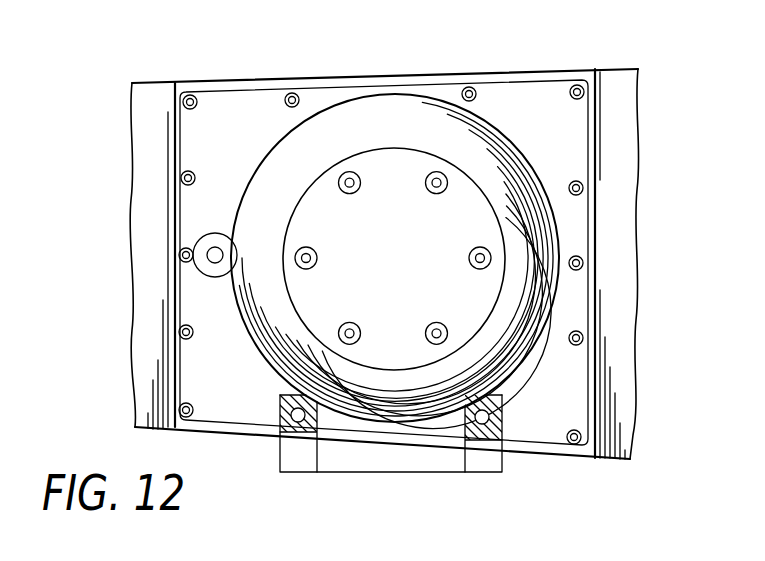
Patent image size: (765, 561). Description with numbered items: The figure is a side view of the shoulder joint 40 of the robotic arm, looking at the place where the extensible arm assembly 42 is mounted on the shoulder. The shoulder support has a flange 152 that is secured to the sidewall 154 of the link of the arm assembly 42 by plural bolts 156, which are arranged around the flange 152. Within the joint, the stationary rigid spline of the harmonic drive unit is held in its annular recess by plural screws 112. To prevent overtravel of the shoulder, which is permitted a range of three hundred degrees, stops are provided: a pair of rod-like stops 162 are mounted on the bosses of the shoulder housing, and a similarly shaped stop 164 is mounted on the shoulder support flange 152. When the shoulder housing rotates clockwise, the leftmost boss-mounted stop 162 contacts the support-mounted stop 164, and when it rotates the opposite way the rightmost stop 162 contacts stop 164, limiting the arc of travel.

The shoulder joint 40 is at (379, 107).
The extensible arm assembly 42 is at (432, 73).
The screws 112 is at (427, 191).
The shoulder support flange 152 is at (577, 163).
The sidewall 154 is at (620, 88).
The bolts 156 is at (578, 194).
The rod-like stops 162 is at (463, 410).
The stop 164 is at (217, 263).